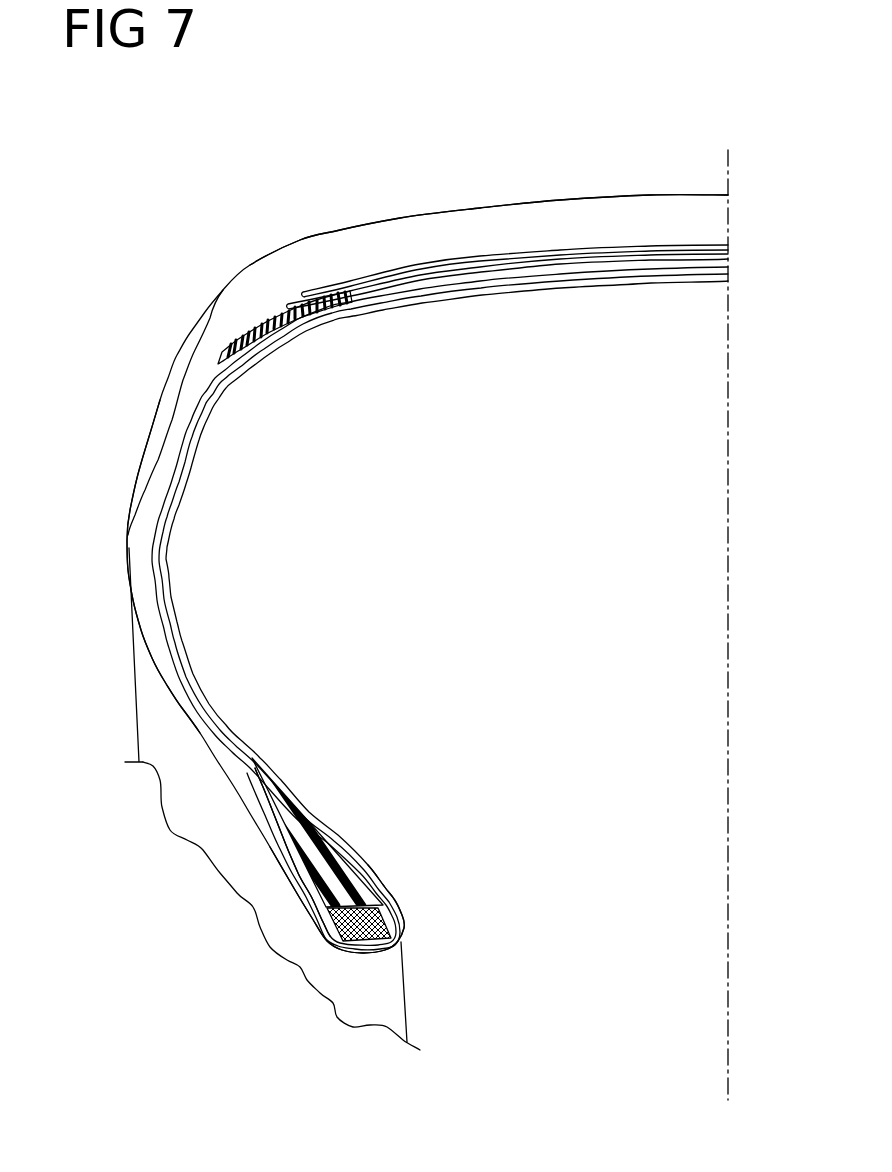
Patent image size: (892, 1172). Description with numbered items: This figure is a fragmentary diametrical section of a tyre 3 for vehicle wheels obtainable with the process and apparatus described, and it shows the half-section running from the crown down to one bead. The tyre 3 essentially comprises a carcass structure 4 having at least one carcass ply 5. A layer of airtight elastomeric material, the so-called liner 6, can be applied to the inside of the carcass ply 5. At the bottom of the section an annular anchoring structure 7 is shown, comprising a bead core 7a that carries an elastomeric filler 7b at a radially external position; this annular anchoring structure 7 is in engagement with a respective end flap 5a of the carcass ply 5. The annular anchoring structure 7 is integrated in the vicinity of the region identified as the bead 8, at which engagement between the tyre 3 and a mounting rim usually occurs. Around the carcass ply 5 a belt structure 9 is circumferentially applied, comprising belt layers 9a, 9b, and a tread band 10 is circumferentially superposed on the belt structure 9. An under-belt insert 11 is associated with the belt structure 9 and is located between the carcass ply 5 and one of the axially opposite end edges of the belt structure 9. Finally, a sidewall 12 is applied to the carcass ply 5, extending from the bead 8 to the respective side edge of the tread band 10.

The tyre 3 is at (82, 614).
The carcass structure 4 is at (140, 541).
The carcass ply 5 is at (202, 698).
The end flaps 5a is at (313, 893).
The liner 6 is at (318, 322).
The annular anchoring structure 7 is at (338, 836).
The bead core 7a is at (385, 920).
The elastomeric filler 7b is at (300, 838).
The bead 8 is at (393, 866).
The belt structure 9 is at (687, 226).
The belt layer 9a is at (547, 263).
The belt layer 9b is at (513, 257).
The tread band 10 is at (603, 213).
The under-belt insert 11 is at (282, 313).
The sidewall 12 is at (141, 479).